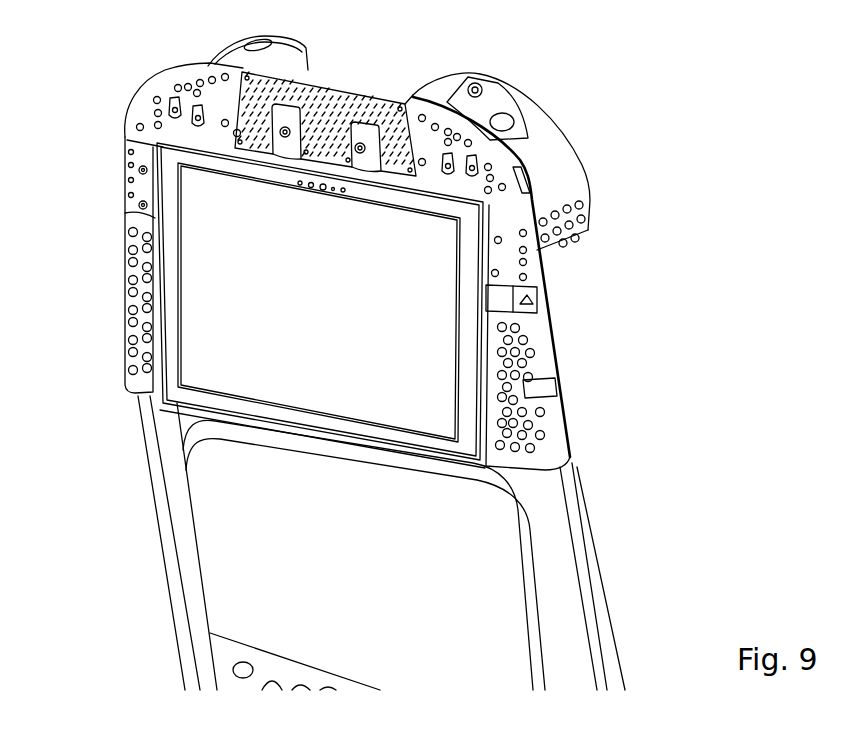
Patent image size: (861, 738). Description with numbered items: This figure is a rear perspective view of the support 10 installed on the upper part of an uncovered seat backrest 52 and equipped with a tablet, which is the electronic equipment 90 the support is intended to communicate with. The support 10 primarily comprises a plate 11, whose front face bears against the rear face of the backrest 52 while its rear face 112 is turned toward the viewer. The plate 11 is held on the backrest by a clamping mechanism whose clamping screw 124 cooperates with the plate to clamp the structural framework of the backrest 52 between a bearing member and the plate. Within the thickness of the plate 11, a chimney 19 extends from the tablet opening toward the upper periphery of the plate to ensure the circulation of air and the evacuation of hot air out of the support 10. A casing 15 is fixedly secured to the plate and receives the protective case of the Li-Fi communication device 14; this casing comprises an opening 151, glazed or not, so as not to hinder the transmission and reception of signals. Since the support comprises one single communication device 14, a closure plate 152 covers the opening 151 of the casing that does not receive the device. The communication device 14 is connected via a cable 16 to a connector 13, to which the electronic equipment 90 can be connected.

The support 10 is at (702, 113).
The plate 11 is at (160, 93).
The connector 13 is at (497, 303).
The communication device 14 is at (499, 103).
The casing 15 is at (314, 39).
The cable 16 is at (537, 298).
The chimney 19 is at (383, 93).
The backrest 52 is at (650, 546).
The electronic equipment 90 is at (228, 337).
The rear face 112 is at (133, 220).
The clamping screw 124 is at (283, 133).
The opening 151 is at (468, 83).
The closure plate 152 is at (228, 47).